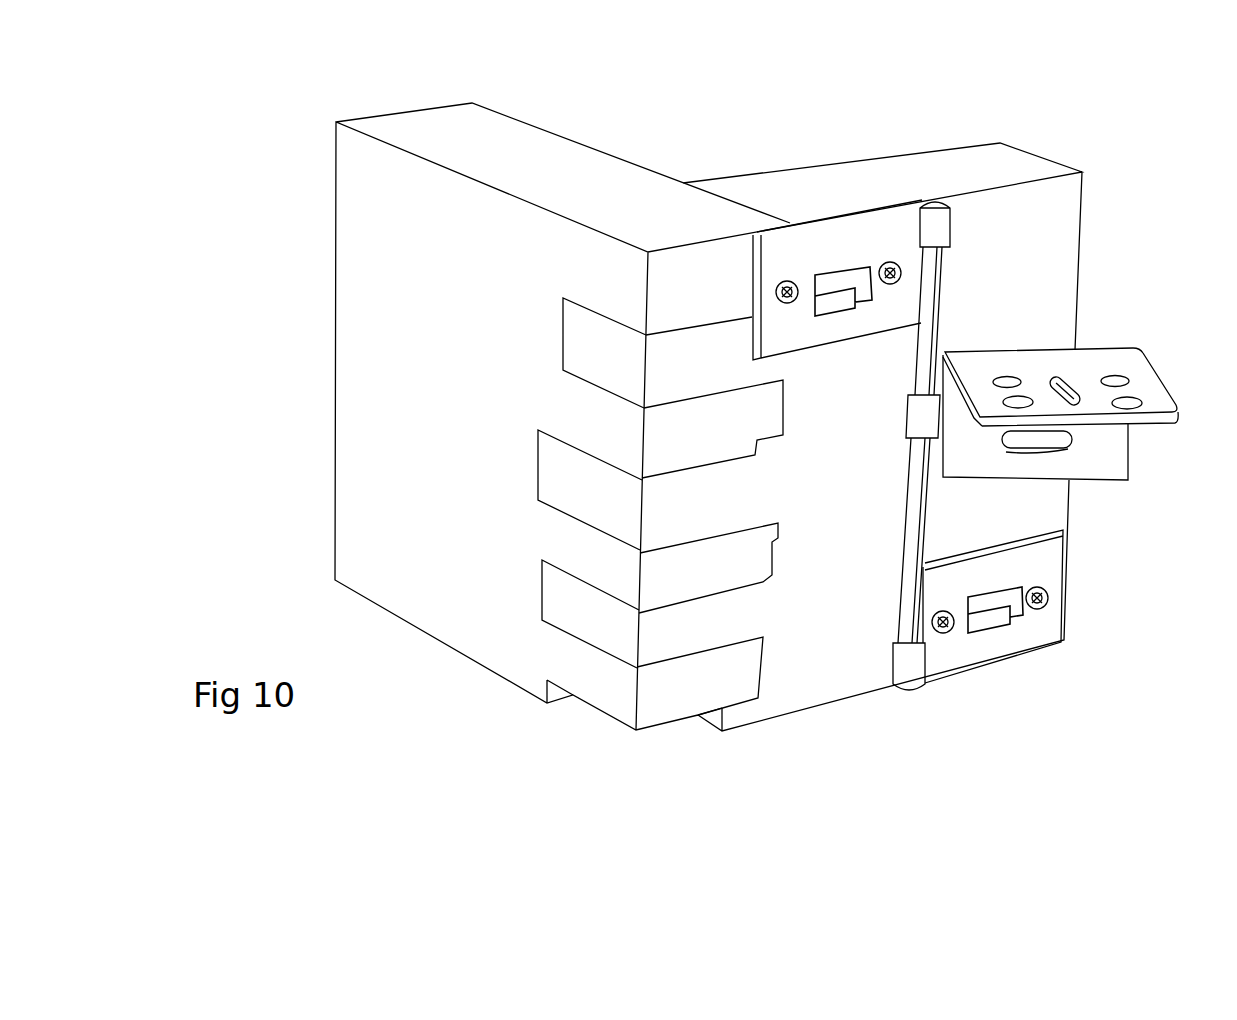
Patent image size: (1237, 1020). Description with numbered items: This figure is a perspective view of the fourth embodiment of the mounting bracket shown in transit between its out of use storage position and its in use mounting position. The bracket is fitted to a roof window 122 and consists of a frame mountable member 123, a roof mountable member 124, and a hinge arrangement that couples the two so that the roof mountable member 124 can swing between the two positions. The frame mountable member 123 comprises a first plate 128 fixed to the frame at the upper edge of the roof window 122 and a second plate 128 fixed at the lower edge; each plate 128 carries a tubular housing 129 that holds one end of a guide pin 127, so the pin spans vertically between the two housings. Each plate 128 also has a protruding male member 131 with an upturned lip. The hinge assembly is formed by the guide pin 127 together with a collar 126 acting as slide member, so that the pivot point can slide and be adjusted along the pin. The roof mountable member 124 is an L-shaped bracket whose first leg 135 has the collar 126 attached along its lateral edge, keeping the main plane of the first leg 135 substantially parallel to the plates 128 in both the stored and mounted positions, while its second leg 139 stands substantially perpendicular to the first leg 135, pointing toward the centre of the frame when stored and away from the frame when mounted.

The roof window 122 is at (472, 602).
The frame mountable member 123 is at (833, 248).
The plate 128 is at (970, 647).
The protruding male member 131 is at (852, 277).
The tubular housing 129 is at (931, 200).
The guide pin 127 is at (918, 525).
The collar 126 is at (920, 417).
The roof mountable member 124 is at (1023, 367).
The second leg 139 is at (1133, 367).
The first leg 135 is at (1113, 452).